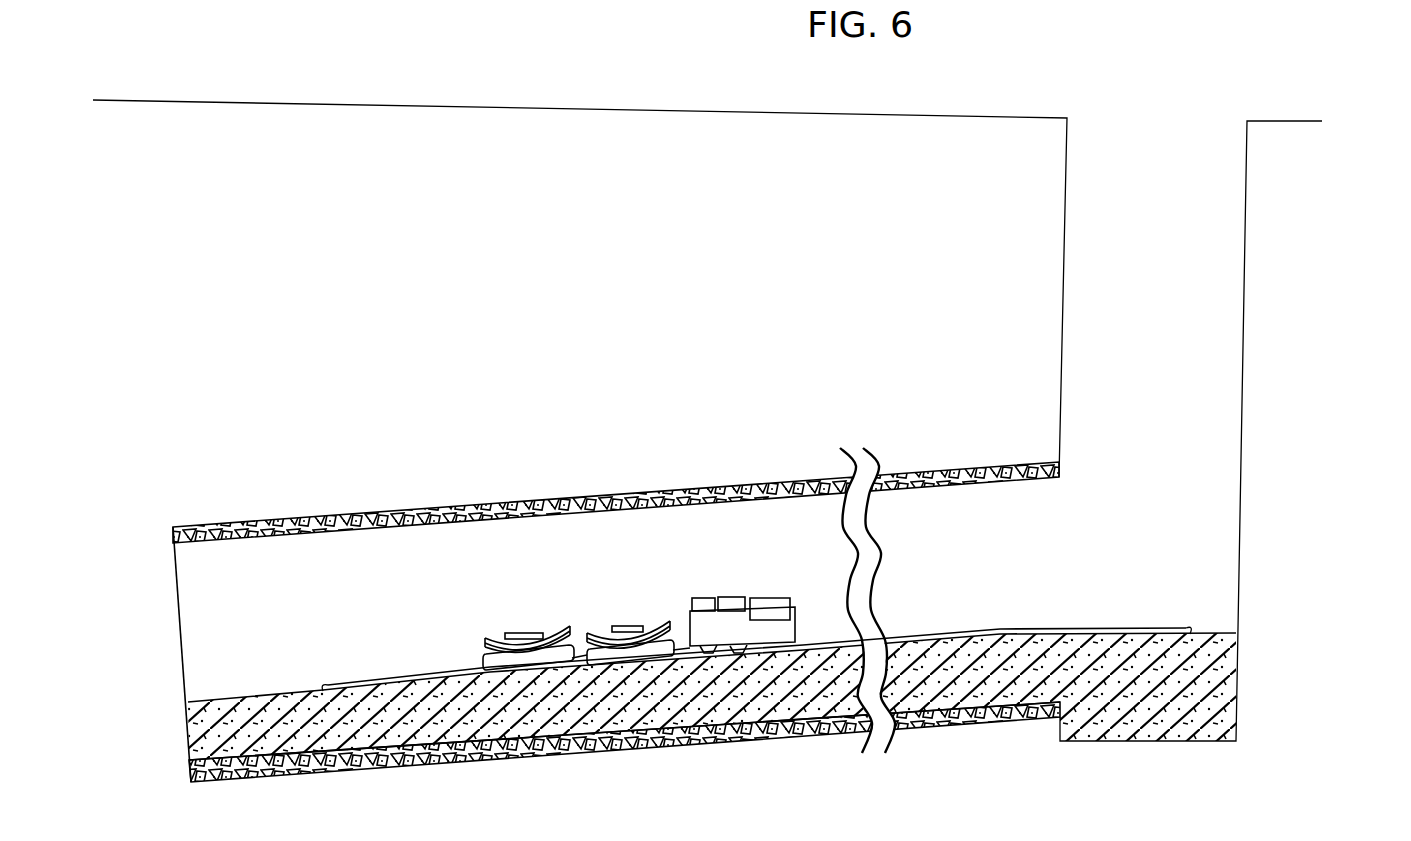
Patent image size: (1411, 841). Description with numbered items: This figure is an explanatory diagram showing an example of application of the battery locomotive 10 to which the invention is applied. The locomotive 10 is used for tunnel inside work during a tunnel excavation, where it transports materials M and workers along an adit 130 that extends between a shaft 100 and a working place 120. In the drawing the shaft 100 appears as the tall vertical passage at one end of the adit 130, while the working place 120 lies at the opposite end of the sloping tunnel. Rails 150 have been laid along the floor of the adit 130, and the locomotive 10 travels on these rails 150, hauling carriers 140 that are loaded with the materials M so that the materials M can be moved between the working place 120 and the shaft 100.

The shaft 100 is at (1238, 468).
The working place 120 is at (178, 612).
The adit 130 is at (610, 500).
The rails 150 is at (390, 686).
The carriage 140 is at (477, 660).
The materials M is at (500, 632).
The battery locomotive 10 is at (700, 599).